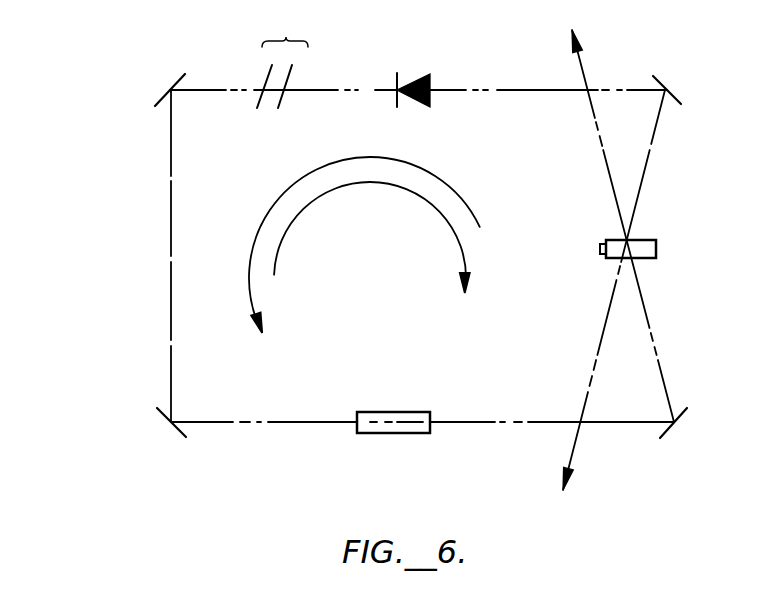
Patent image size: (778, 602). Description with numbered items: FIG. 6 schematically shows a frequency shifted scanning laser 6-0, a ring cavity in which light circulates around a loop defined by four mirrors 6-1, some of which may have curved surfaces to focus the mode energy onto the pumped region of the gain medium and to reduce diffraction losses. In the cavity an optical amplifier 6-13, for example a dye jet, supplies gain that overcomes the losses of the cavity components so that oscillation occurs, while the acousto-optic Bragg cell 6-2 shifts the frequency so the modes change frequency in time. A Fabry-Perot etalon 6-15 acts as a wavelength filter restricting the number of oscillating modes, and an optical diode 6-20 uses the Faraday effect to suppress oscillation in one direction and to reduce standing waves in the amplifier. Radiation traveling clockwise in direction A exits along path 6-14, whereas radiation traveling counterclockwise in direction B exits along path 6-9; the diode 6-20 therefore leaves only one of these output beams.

The frequency shifted scanning laser 6-0 is at (115, 230).
The mirrors 6-1 is at (165, 89).
The acousto-optic Bragg cell 6-2 is at (650, 238).
The output path 6-9 is at (586, 70).
The optical amplifier 6-13 is at (372, 435).
The output path 6-14 is at (580, 442).
The etalon 6-15 is at (287, 38).
The optical diode 6-20 is at (415, 73).